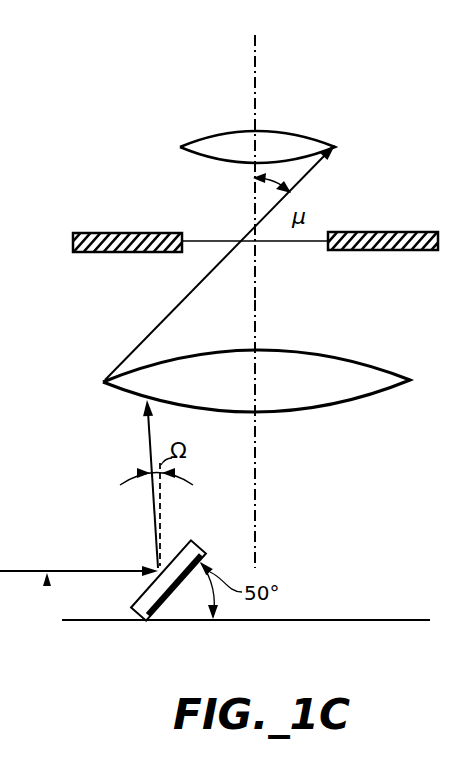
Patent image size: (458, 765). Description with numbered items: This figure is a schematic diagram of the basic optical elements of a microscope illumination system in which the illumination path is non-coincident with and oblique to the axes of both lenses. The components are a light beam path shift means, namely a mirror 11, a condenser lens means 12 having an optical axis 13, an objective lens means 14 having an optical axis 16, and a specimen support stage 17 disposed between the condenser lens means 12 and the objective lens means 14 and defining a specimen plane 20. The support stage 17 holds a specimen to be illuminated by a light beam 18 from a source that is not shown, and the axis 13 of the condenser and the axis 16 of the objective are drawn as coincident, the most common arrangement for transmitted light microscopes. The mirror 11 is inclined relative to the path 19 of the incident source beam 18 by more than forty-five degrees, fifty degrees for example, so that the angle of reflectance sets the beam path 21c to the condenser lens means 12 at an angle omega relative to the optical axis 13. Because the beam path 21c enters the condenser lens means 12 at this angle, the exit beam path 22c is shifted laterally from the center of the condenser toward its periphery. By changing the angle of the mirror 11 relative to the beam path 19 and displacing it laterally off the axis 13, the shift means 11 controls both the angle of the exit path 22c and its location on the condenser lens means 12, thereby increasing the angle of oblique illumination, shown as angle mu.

The light beam path shift means 11 is at (193, 541).
The condenser lens means 12 is at (376, 398).
The optical axis 13 is at (258, 493).
The objective lens means 14 is at (311, 134).
The optical axis 16 is at (260, 84).
The specimen support stage 17 is at (392, 232).
The light beam 18 is at (47, 584).
The path of incident source beam 19 is at (86, 570).
The specimen plane 20 is at (316, 240).
The beam path 21c is at (146, 441).
The exit beam path 22c is at (166, 312).